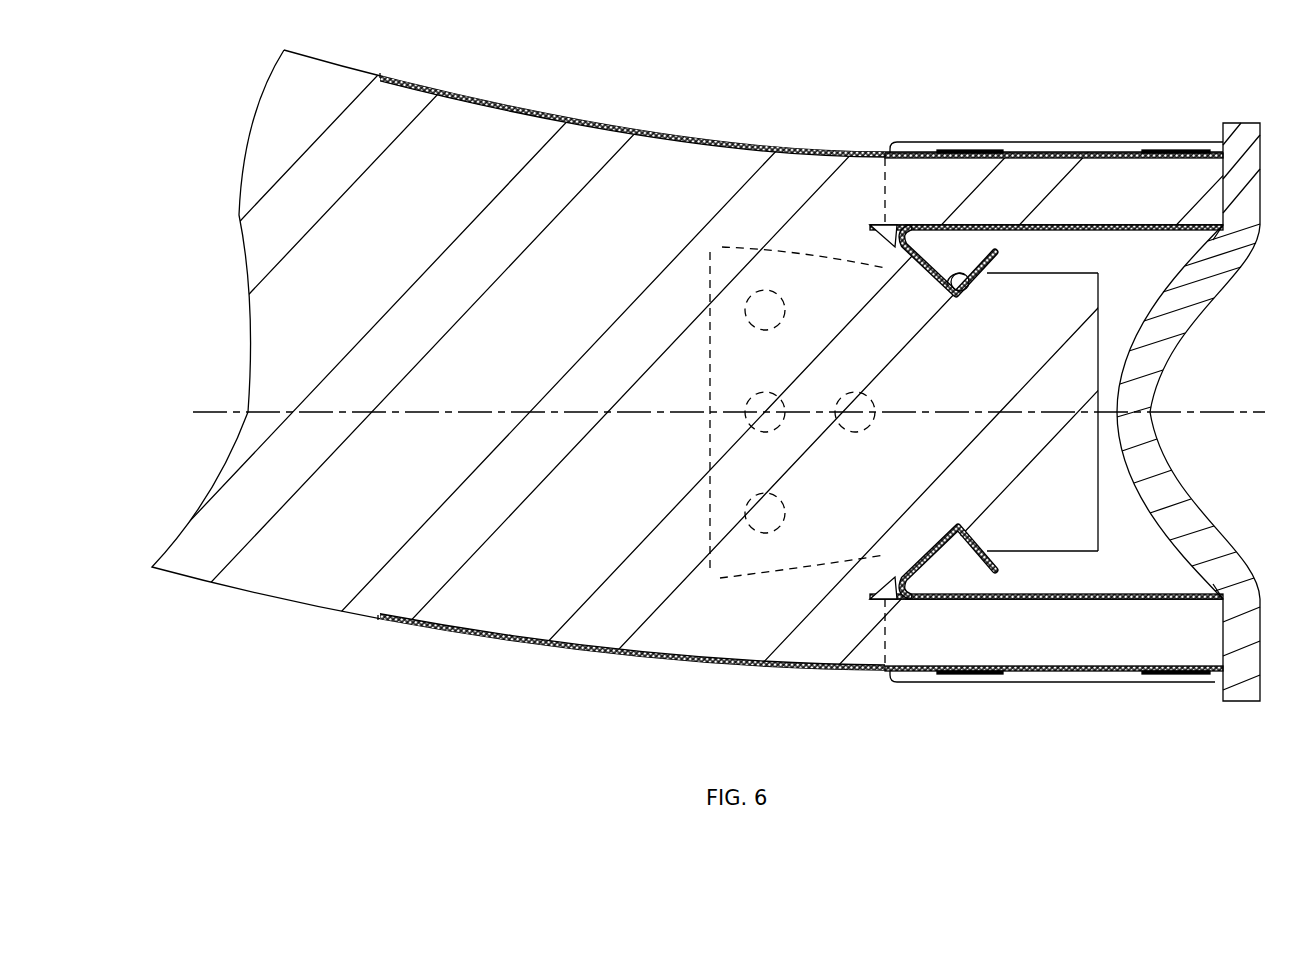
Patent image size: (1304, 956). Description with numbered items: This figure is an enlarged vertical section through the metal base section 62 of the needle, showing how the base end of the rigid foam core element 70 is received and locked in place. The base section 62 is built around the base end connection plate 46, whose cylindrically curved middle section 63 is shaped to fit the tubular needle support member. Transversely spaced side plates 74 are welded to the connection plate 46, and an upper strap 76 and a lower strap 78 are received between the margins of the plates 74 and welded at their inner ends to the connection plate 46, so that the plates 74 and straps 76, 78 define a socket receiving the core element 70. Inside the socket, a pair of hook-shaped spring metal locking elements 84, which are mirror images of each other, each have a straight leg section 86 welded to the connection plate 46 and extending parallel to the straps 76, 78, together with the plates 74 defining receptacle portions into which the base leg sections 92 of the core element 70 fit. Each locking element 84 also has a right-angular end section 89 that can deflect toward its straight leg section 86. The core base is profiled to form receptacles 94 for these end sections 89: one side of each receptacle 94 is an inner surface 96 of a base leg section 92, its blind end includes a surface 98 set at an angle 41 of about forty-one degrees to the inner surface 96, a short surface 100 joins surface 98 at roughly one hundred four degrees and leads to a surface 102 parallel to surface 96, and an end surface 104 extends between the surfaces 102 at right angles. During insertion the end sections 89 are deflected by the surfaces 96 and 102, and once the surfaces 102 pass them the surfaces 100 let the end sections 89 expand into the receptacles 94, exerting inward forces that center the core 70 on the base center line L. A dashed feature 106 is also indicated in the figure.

The rigid foam core element 70 is at (240, 158).
The upper sheet metal strap 76 is at (762, 138).
The lower sheet metal strap 78 is at (450, 637).
The base leg section 92 is at (1052, 152).
The side plate 74 is at (1110, 142).
The metal base section 62 is at (975, 106).
The locking element 84 is at (1041, 238).
The straight leg section 86 is at (1147, 231).
The inner surface 96 is at (1188, 230).
The receptacle 94 is at (1104, 268).
The surface 98 is at (885, 245).
The angle 41 is at (893, 226).
The short surface 100 is at (960, 297).
The right-angular end section 89 is at (950, 287).
The end surface 104 is at (953, 292).
The surface 102 is at (1060, 275).
The hidden feature 106 is at (700, 295).
The base end connection plate 46 is at (1257, 276).
The curved middle section 63 is at (1157, 423).
The base center line L is at (1228, 410).